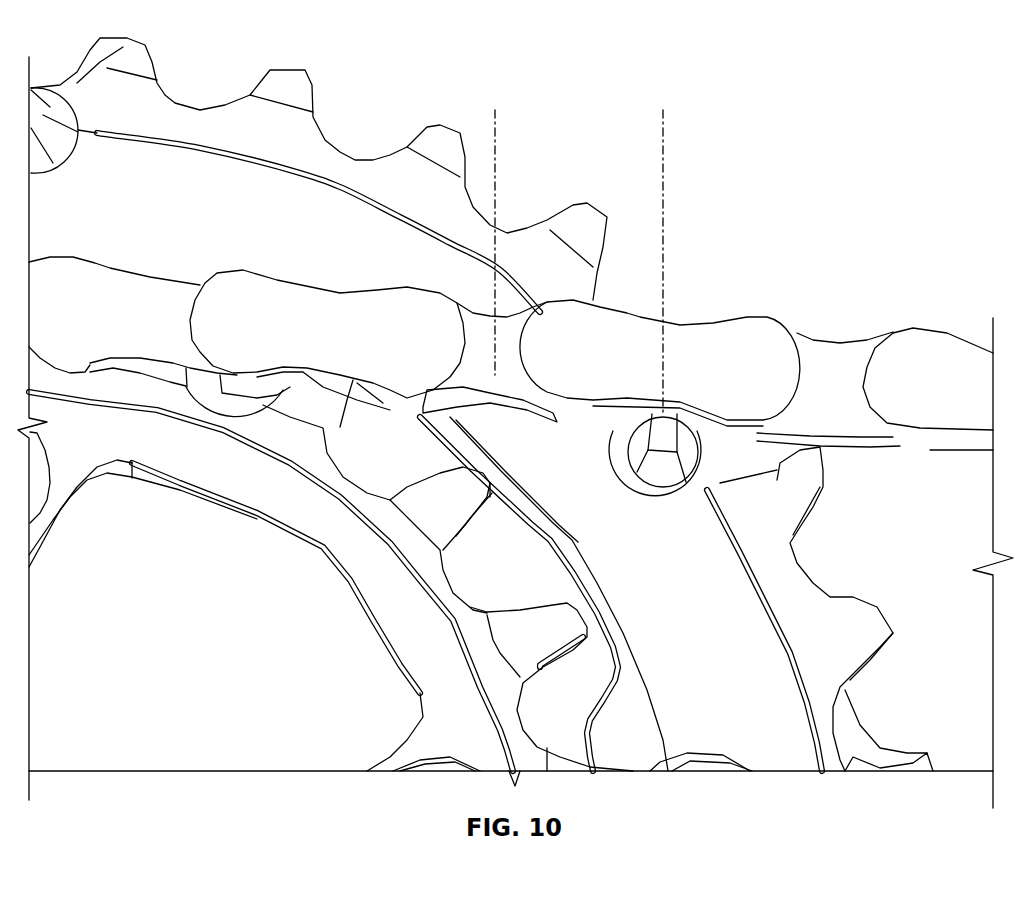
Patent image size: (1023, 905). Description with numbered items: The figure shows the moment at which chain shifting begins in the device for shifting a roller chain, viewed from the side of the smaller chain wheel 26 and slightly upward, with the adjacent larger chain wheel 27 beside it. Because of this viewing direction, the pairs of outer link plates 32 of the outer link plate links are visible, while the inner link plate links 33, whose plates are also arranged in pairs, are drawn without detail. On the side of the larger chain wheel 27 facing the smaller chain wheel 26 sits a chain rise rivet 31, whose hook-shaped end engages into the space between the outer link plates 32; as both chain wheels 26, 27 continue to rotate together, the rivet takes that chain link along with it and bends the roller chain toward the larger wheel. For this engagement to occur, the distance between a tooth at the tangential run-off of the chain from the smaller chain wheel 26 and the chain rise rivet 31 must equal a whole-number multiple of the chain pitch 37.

The smaller chain wheel 26 is at (268, 503).
The larger chain wheel 27 is at (273, 117).
The chain rise rivet 31 is at (668, 405).
The outer link plates 32 is at (390, 330).
The inner link plate link 33 is at (513, 337).
The chain pitch 37 is at (495, 112).